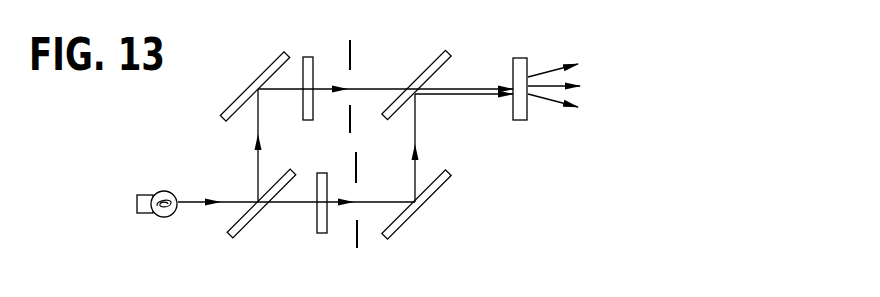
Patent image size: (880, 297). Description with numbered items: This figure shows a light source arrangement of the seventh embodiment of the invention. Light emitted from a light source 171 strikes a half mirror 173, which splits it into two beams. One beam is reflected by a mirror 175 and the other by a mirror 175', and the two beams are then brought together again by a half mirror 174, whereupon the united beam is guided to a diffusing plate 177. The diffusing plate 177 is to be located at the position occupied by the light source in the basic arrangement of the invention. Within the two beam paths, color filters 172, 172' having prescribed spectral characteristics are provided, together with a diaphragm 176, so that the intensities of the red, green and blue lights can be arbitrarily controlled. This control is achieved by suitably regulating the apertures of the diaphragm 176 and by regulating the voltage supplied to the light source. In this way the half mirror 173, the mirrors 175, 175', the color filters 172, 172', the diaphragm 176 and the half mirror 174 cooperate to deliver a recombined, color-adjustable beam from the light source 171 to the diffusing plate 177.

The light source 171 is at (160, 192).
The color filter 172 is at (304, 61).
The color filter 172' is at (318, 231).
The half mirror 173 is at (252, 221).
The half mirror 174 is at (445, 53).
The mirror 175 is at (250, 77).
The mirror 175' is at (442, 204).
The diaphragm 176 is at (352, 46).
The diffusing plate 177 is at (520, 58).